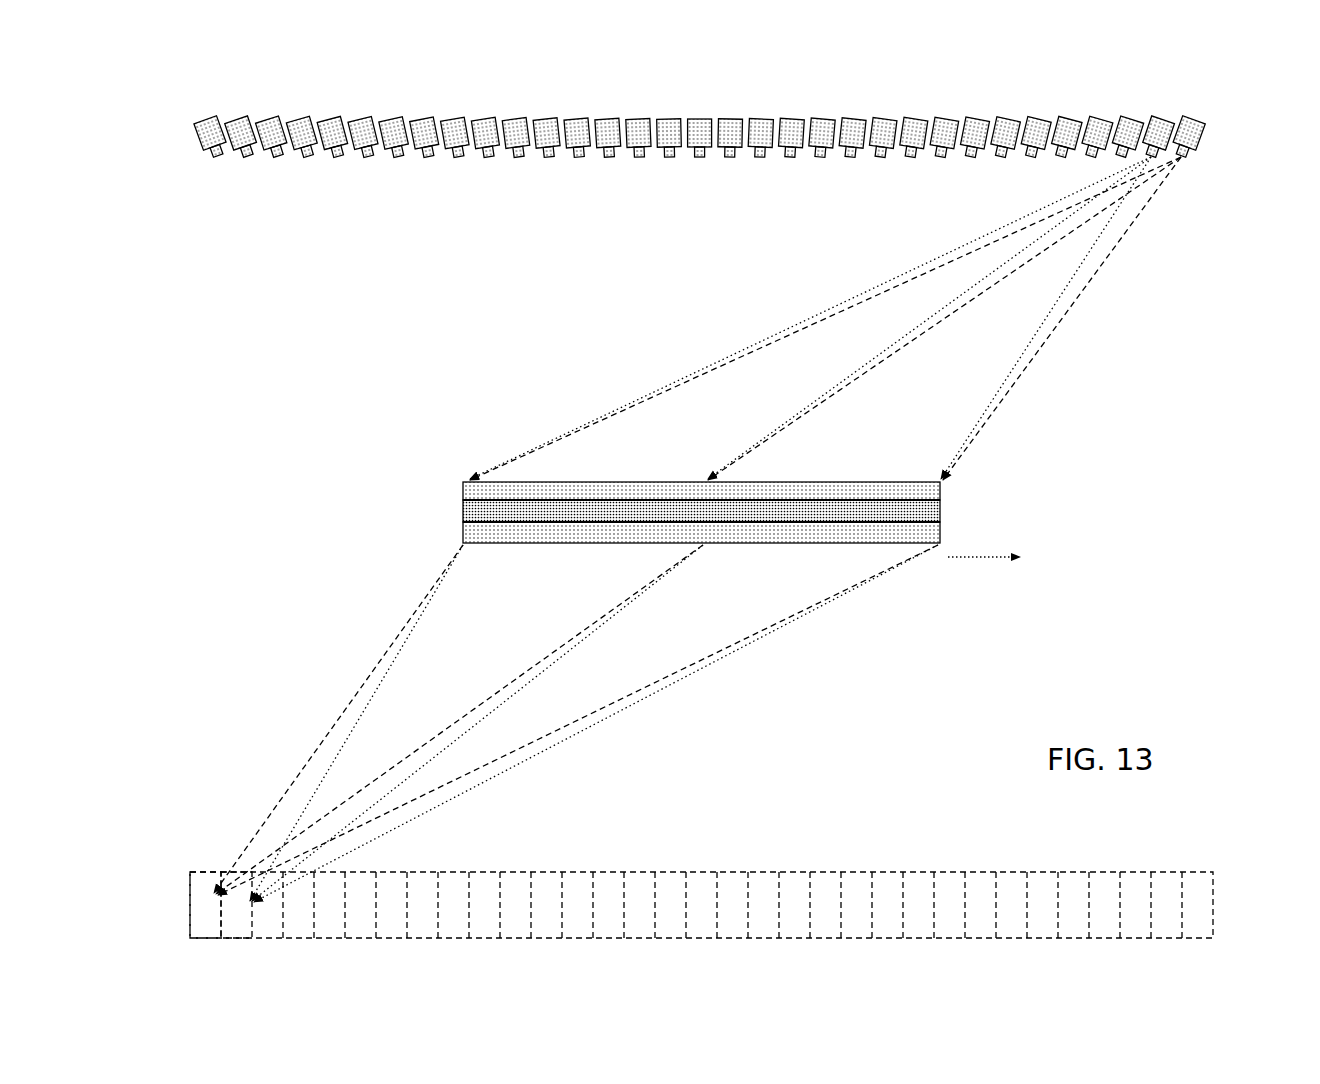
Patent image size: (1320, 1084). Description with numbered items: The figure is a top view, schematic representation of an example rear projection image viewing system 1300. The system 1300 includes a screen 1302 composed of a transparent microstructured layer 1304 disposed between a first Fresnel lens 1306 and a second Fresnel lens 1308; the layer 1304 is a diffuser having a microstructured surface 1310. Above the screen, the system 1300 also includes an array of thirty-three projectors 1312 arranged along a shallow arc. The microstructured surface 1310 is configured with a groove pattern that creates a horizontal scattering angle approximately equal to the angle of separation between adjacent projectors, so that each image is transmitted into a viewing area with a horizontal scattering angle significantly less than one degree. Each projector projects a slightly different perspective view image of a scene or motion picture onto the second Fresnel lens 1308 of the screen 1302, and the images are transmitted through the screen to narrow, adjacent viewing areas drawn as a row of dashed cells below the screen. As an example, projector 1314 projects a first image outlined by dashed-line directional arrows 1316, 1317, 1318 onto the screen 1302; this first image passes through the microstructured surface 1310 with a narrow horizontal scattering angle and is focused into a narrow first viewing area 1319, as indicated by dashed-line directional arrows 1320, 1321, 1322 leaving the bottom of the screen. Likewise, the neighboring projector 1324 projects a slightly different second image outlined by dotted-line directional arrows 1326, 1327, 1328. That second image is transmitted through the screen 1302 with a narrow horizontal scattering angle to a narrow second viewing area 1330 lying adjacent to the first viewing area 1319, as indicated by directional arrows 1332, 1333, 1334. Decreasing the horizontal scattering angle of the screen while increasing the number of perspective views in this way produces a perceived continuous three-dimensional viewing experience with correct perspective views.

The rear projection image viewing system 1300 is at (292, 566).
The screen 1302 is at (461, 400).
The transparent microstructured layer 1304 is at (940, 505).
The first Fresnel lens 1306 is at (780, 535).
The second Fresnel lens 1308 is at (808, 482).
The microstructured surface 1310 is at (600, 497).
The array of projectors 1312 is at (366, 198).
The projector 1314 is at (1203, 125).
The dashed-line directional arrow 1316 is at (806, 328).
The dashed-line directional arrow 1317 is at (935, 323).
The dashed-line directional arrow 1318 is at (1084, 291).
The first viewing area 1319 is at (203, 878).
The dashed-line directional arrow 1320 is at (320, 738).
The dashed-line directional arrow 1321 is at (553, 642).
The dashed-line directional arrow 1322 is at (728, 644).
The projector 1324 is at (1165, 122).
The dotted-line directional arrow 1326 is at (866, 291).
The dotted-line directional arrow 1327 is at (812, 401).
The dotted-line directional arrow 1328 is at (975, 426).
The second viewing area 1330 is at (232, 876).
The dashed-line directional arrow 1332 is at (357, 716).
The dashed-line directional arrow 1333 is at (531, 681).
The dashed-line directional arrow 1334 is at (593, 725).